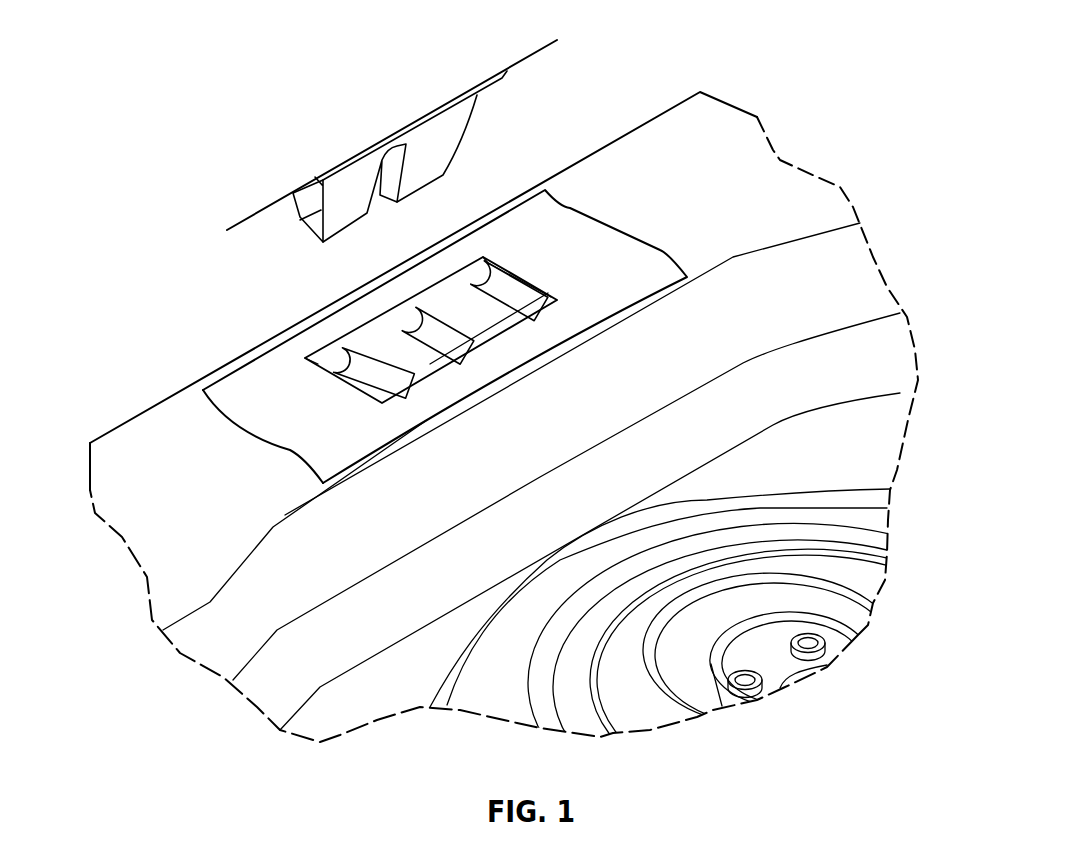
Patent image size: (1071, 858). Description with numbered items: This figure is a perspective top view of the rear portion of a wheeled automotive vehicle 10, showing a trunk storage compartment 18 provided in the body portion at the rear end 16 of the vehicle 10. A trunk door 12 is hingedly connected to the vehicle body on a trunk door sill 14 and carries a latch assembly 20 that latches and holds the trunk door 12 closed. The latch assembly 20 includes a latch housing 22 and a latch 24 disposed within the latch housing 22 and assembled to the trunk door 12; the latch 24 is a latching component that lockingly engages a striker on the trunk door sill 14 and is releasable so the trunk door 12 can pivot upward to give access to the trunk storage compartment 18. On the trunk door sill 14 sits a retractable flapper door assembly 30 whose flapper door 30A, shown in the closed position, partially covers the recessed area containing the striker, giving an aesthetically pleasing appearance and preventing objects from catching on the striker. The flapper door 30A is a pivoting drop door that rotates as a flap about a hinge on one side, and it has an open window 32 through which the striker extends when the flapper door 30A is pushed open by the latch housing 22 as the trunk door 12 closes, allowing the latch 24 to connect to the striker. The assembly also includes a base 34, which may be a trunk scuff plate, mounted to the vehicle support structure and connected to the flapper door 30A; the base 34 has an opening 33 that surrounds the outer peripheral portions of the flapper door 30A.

The vehicle 10 is at (122, 339).
The trunk door 12 is at (527, 55).
The trunk door sill 14 is at (708, 128).
The rear end 16 is at (643, 122).
The trunk storage compartment 18 is at (806, 438).
The latch assembly 20 is at (357, 263).
The latch housing 22 is at (420, 188).
The latch 24 is at (380, 197).
The retractable flapper door assembly 30 is at (371, 336).
The flapper door 30A is at (423, 360).
The open window 32 is at (453, 338).
The opening 33 is at (540, 287).
The base 34 is at (258, 385).